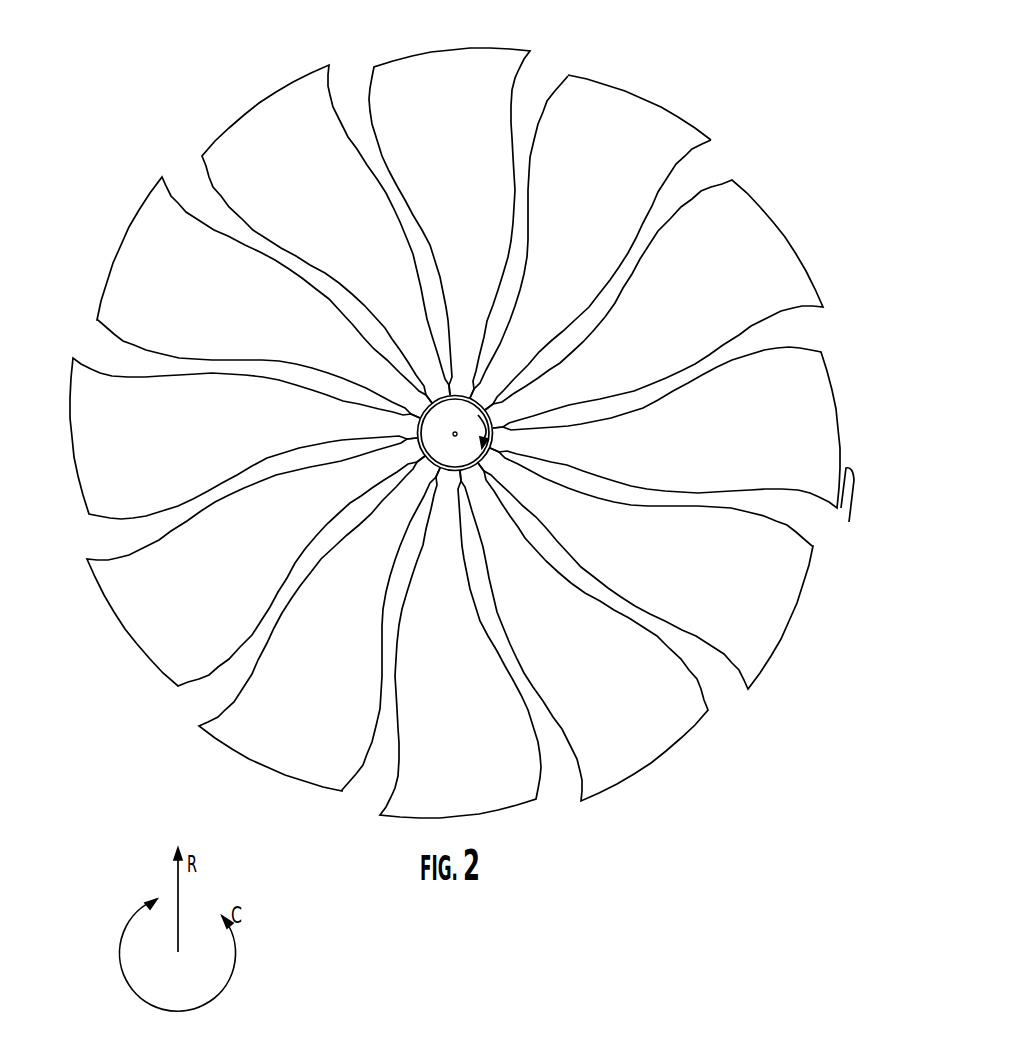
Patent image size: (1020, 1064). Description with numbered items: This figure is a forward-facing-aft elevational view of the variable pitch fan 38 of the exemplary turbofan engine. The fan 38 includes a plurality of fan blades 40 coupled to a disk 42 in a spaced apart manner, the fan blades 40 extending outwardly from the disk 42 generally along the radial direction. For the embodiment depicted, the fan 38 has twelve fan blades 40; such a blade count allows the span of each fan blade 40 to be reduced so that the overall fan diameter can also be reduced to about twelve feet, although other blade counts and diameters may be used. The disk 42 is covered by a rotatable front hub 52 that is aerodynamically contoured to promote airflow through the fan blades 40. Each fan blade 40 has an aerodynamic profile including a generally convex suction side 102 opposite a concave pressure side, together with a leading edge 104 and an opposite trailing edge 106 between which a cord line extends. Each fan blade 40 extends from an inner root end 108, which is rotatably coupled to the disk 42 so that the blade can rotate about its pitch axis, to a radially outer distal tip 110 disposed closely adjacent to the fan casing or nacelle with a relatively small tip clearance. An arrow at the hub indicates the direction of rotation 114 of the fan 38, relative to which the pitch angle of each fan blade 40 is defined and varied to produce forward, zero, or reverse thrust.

The variable pitch fan 38 is at (649, 65).
The fan blade 40 is at (797, 372).
The disk 42 is at (503, 399).
The rotatable front hub 52 is at (459, 426).
The suction side 102 is at (590, 238).
The leading edge 104 is at (681, 170).
The trailing edge 106 is at (549, 95).
The inner root end 108 is at (508, 443).
The radially outer distal tip 110 is at (838, 510).
The direction of rotation 114 is at (481, 437).